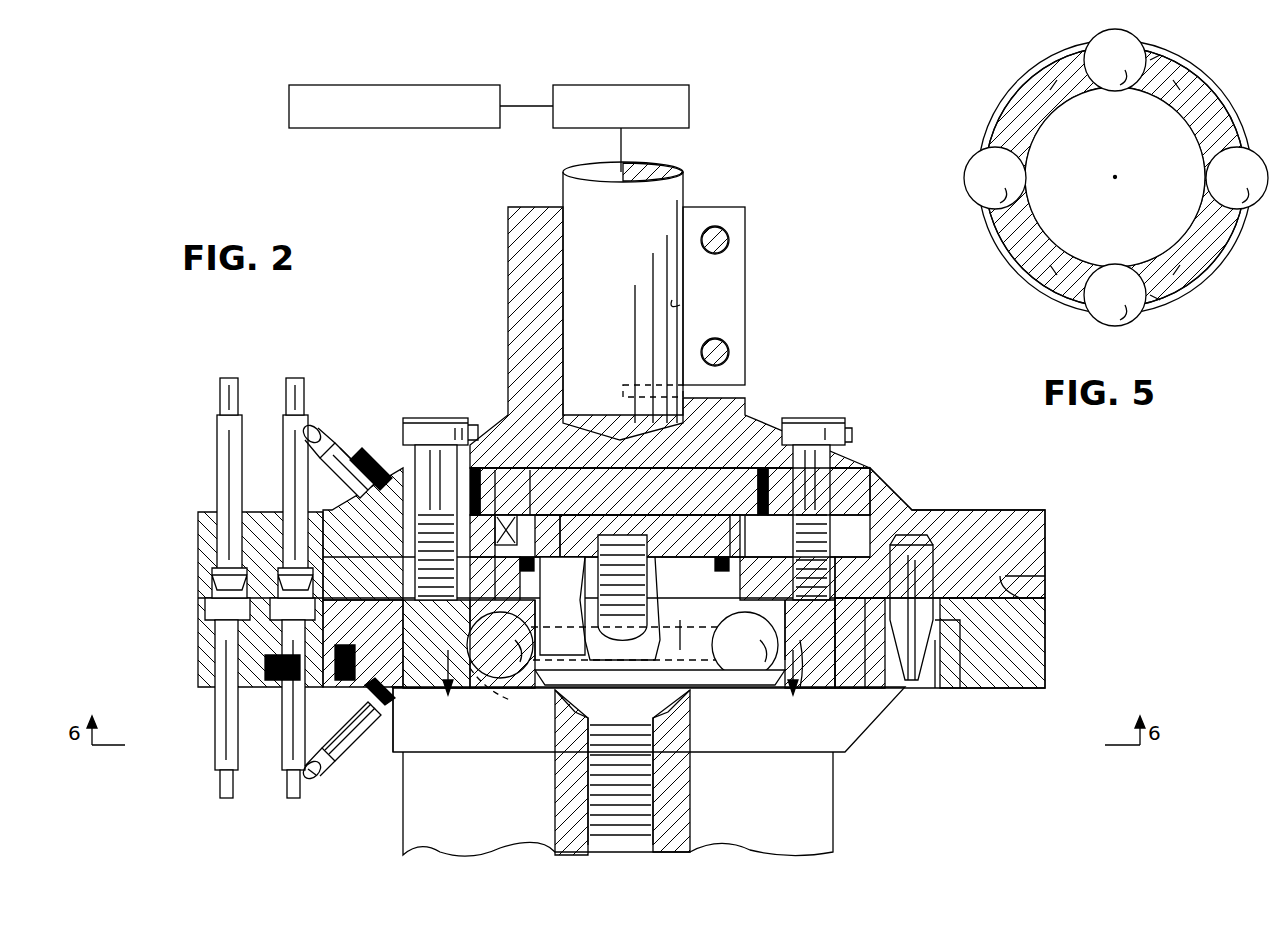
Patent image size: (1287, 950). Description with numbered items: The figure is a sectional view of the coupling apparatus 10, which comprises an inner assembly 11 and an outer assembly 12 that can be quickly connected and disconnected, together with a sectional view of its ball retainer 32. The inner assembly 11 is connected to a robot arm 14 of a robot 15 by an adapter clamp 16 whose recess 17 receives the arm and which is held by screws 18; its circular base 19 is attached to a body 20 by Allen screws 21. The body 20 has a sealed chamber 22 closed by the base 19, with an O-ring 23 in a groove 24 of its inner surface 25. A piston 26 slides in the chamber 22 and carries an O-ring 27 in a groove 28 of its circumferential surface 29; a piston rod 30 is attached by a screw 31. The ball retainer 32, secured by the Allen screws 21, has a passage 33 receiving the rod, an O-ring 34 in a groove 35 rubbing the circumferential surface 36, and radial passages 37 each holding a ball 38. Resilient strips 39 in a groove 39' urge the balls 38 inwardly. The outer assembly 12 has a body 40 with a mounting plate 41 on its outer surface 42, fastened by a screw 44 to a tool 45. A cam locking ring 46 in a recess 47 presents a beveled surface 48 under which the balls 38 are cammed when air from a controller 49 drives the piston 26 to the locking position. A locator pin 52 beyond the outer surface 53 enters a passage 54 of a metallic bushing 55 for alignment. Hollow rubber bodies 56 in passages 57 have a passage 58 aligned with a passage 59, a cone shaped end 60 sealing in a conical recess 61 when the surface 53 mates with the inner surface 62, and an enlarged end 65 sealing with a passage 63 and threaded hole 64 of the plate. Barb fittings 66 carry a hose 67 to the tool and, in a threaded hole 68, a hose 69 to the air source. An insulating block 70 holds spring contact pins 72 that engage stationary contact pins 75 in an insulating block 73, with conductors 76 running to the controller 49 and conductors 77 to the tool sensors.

In FIG. 2, the controller 49 is at (420, 86).
In FIG. 2, the robot 15 is at (590, 86).
In FIG. 2, the robot arm 14 is at (568, 182).
In FIG. 2, the adapter clamp 16 is at (748, 322).
In FIG. 2, the recess 17 is at (678, 305).
In FIG. 2, the screws 18 is at (728, 235).
In FIG. 2, the coupling apparatus 10 is at (848, 405).
In FIG. 2, the inner assembly 11 is at (1048, 505).
In FIG. 2, the outer assembly 12 is at (1047, 672).
In FIG. 2, the circular base 19 is at (853, 445).
In FIG. 2, the body 20 is at (1047, 548).
In FIG. 2, the Allen screws 21 is at (800, 416).
In FIG. 2, the sealed chamber 22 is at (516, 488).
In FIG. 2, the O-ring 23 is at (755, 500).
In FIG. 2, the groove 24 is at (470, 420).
In FIG. 2, the inner surface 25 is at (870, 462).
In FIG. 2, the piston 26 is at (562, 520).
In FIG. 2, the O-ring 27 is at (512, 520).
In FIG. 2, the groove 28 is at (535, 565).
In FIG. 2, the circumferential surface 29 is at (740, 520).
In FIG. 2, the piston rod 30 is at (690, 672).
In FIG. 2, the screw 31 is at (640, 520).
In FIG. 2, the ball retainer 32 is at (911, 607).
In FIG. 5, the ball retainer 32 is at (1215, 60).
In FIG. 2, the inner round cylindrical passage 33 is at (690, 600).
In FIG. 5, the inner round cylindrical passage 33 is at (1158, 103).
In FIG. 2, the O-ring 34 is at (548, 590).
In FIG. 2, the groove 35 is at (620, 530).
In FIG. 2, the circumferential surface 36 is at (712, 572).
In FIG. 2, the radial passages 37 is at (560, 635).
In FIG. 5, the radial passages 37 is at (1208, 165).
In FIG. 2, the balls 38 is at (518, 695).
In FIG. 5, the balls 38 is at (1108, 310).
In FIG. 2, the resilient strips 39 is at (493, 696).
In FIG. 5, the resilient strips 39 is at (1135, 208).
In FIG. 5, the groove 39' is at (1217, 177).
In FIG. 2, the body 40 is at (1047, 638).
In FIG. 2, the mounting plate 41 is at (868, 740).
In FIG. 2, the outer surface 42 is at (1035, 690).
In FIG. 2, the screw 44 is at (655, 790).
In FIG. 2, the tool 45 is at (835, 810).
In FIG. 2, the cam locking ring 46 is at (805, 690).
In FIG. 2, the recess 47 is at (850, 690).
In FIG. 2, the beveled surface 48 is at (692, 640).
In FIG. 2, the guide or locator pin 52 is at (880, 690).
In FIG. 2, the outer surface 53 is at (1047, 606).
In FIG. 2, the passage 54 is at (937, 690).
In FIG. 2, the metallic bushing 55 is at (962, 680).
In FIG. 2, the hollow rubber bodies 56 is at (262, 660).
In FIG. 2, the passages 57 is at (415, 736).
In FIG. 2, the passage 58 is at (333, 680).
In FIG. 2, the passage 59 is at (435, 509).
In FIG. 2, the cone shaped end 60 is at (350, 545).
In FIG. 2, the conical shaped recess 61 is at (420, 630).
In FIG. 2, the inner surface 62 is at (1047, 573).
In FIG. 2, the passage 63 is at (378, 718).
In FIG. 2, the threaded hole 64 is at (345, 762).
In FIG. 2, the enlarged end 65 is at (455, 688).
In FIG. 2, the barb fitting 66 is at (350, 468).
In FIG. 2, the hose 67 is at (330, 775).
In FIG. 2, the threaded hole 68 is at (375, 465).
In FIG. 2, the hose 69 is at (318, 425).
In FIG. 2, the electrically insulating block 70 is at (196, 530).
In FIG. 2, the spring contact pins 72 is at (215, 432).
In FIG. 2, the electrically insulating block 73 is at (196, 628).
In FIG. 2, the stationary contact pins 75 is at (213, 730).
In FIG. 2, the conductor 76 is at (218, 395).
In FIG. 2, the conductor 77 is at (220, 790).